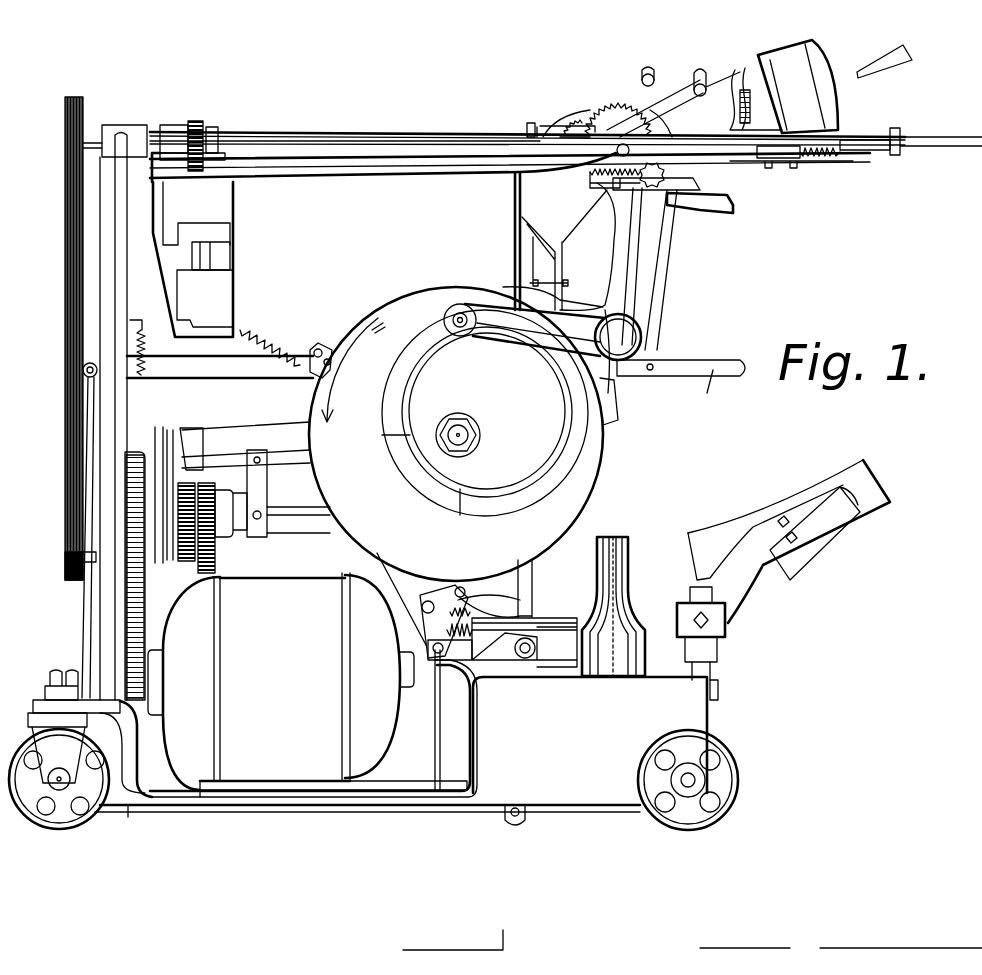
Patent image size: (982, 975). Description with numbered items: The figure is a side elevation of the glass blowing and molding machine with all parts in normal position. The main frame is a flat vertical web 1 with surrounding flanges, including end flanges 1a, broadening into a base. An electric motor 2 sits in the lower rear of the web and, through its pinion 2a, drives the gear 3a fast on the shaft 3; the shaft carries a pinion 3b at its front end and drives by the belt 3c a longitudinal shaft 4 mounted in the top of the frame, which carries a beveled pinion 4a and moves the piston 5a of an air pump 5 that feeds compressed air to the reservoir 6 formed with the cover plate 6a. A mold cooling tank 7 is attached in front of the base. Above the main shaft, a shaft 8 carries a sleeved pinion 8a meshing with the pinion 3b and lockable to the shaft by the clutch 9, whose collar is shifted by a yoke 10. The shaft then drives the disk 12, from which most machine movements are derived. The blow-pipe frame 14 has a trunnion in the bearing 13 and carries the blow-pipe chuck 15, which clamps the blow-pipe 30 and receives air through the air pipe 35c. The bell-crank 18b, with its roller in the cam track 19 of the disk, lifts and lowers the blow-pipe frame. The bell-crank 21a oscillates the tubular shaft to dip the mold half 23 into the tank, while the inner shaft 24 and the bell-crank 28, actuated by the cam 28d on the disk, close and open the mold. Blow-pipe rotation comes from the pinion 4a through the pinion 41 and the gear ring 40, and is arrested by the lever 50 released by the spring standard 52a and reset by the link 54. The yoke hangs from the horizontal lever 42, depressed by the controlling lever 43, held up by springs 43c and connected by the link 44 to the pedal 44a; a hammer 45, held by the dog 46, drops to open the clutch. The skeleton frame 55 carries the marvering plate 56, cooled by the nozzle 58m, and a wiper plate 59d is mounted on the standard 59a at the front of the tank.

The flat vertical web 1 is at (140, 288).
The end flanges 1a is at (125, 430).
The electric motor 2 is at (372, 735).
The pinion 2a is at (128, 690).
The shaft 3 is at (66, 557).
The gear 3a is at (125, 608).
The pinion 3b is at (215, 585).
The belt 3c is at (66, 257).
The longitudinal shaft 4 is at (88, 143).
The beveled pinion 4a is at (526, 135).
The air pump 5 is at (225, 300).
The piston 5a is at (200, 255).
The reservoir 6 is at (407, 204).
The cover plate 6a is at (333, 210).
The mold cooling tank 7 is at (655, 725).
The shaft 8 is at (300, 515).
The pinion 8a is at (190, 482).
The clutch 9 is at (237, 525).
The yoke 10 is at (250, 497).
The disk 12 is at (580, 478).
The transverse bearing 13 is at (572, 215).
The blow-pipe frame 14 is at (287, 160).
The blow-pipe chuck 15 is at (195, 125).
The bell-crank 18b is at (650, 270).
The cam track 19 is at (400, 376).
The bell-crank 21a is at (488, 590).
The mold half 23 is at (620, 575).
The shaft 24 is at (530, 645).
The bell-crank 28 is at (425, 610).
The cam 28d is at (612, 394).
The blow-pipe 30 is at (475, 135).
The air pipe 35c is at (475, 177).
The double-face gear ring 40 is at (620, 118).
The pinion 41 is at (562, 130).
The horizontal lever 42 is at (275, 445).
The controlling lever 43 is at (700, 391).
The springs 43c is at (147, 350).
The link 44 is at (95, 470).
The pedal 44a is at (344, 812).
The hammer 45 is at (190, 430).
The dog 46 is at (325, 345).
The lever 50 is at (593, 108).
The spring standard 52a is at (702, 80).
The link 54 is at (670, 240).
The skeleton frame 55 is at (732, 80).
The marvering plate 56 is at (820, 105).
The nozzle 58m is at (900, 58).
The standard 59a is at (712, 668).
The wiper plate 59d is at (870, 490).